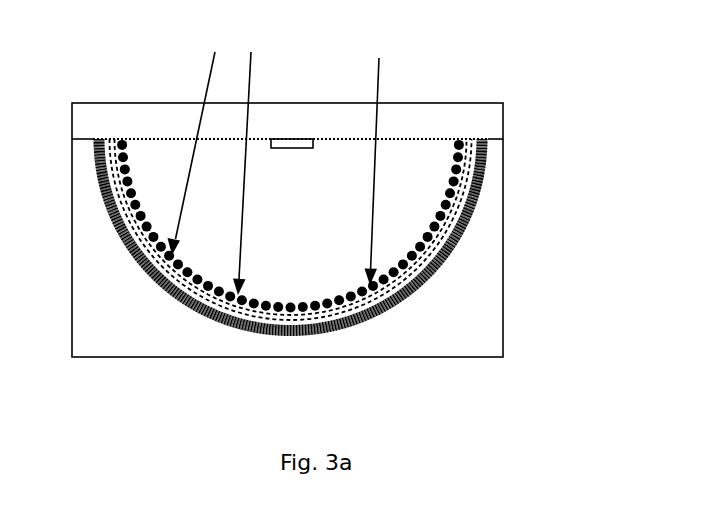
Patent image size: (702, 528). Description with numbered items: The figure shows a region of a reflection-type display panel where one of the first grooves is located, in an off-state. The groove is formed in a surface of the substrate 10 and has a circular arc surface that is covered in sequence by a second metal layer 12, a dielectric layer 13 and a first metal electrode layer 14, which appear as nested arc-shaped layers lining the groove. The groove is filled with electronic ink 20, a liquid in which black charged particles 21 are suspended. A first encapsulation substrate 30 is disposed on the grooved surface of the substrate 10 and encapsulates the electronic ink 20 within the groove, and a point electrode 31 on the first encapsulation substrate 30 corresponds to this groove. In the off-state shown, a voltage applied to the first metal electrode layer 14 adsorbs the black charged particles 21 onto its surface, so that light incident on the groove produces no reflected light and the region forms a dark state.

The substrate 10 is at (458, 289).
The second metal layer 12 is at (267, 328).
The dielectric layer 13 is at (299, 325).
The first metal electrode layer 14 is at (340, 310).
The electronic ink 20 is at (408, 213).
The black charged particles 21 is at (460, 182).
The first encapsulation substrate 30 is at (480, 122).
The point electrode 31 is at (287, 145).